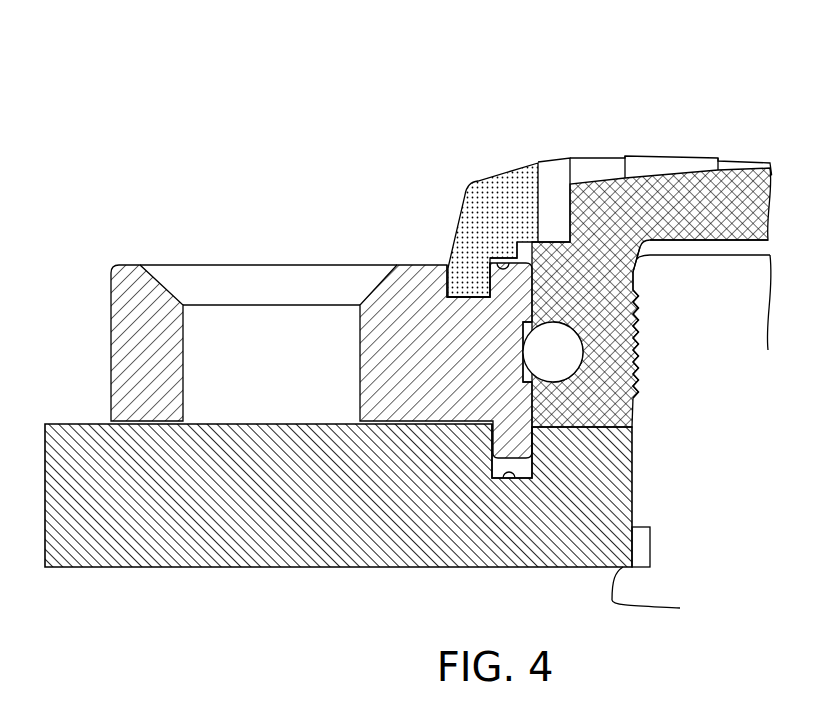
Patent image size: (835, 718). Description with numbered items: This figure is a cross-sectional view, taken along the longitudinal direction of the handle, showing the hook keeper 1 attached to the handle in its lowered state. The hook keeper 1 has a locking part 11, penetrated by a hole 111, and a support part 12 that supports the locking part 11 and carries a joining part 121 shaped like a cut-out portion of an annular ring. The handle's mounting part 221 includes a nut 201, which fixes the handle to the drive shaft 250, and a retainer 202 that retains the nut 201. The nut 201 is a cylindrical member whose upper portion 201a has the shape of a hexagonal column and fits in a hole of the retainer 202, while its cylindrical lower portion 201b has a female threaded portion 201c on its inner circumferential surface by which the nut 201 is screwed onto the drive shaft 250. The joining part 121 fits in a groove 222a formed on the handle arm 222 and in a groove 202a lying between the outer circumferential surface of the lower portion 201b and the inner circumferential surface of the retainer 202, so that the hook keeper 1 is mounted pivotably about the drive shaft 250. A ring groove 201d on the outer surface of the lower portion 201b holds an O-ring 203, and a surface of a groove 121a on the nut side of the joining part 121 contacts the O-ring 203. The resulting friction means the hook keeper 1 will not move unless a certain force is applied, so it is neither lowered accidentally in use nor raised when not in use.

The hook keeper 1 is at (290, 375).
The locking part 11 is at (120, 357).
The hole 111 is at (271, 255).
The support part 12 is at (446, 375).
The joining part 121 is at (450, 293).
The groove 121a is at (533, 370).
The retainer 202 is at (509, 177).
The groove 202a is at (485, 272).
The nut 201 is at (652, 229).
The upper portion 201a is at (662, 185).
The lower portion 201b is at (613, 302).
The female threaded portion 201c is at (637, 313).
The ring groove 201d is at (583, 353).
The O-ring 203 is at (585, 370).
The mounting part 221 is at (695, 128).
The handle arm 222 is at (350, 481).
The groove 222a is at (508, 478).
The drive shaft 250 is at (741, 263).